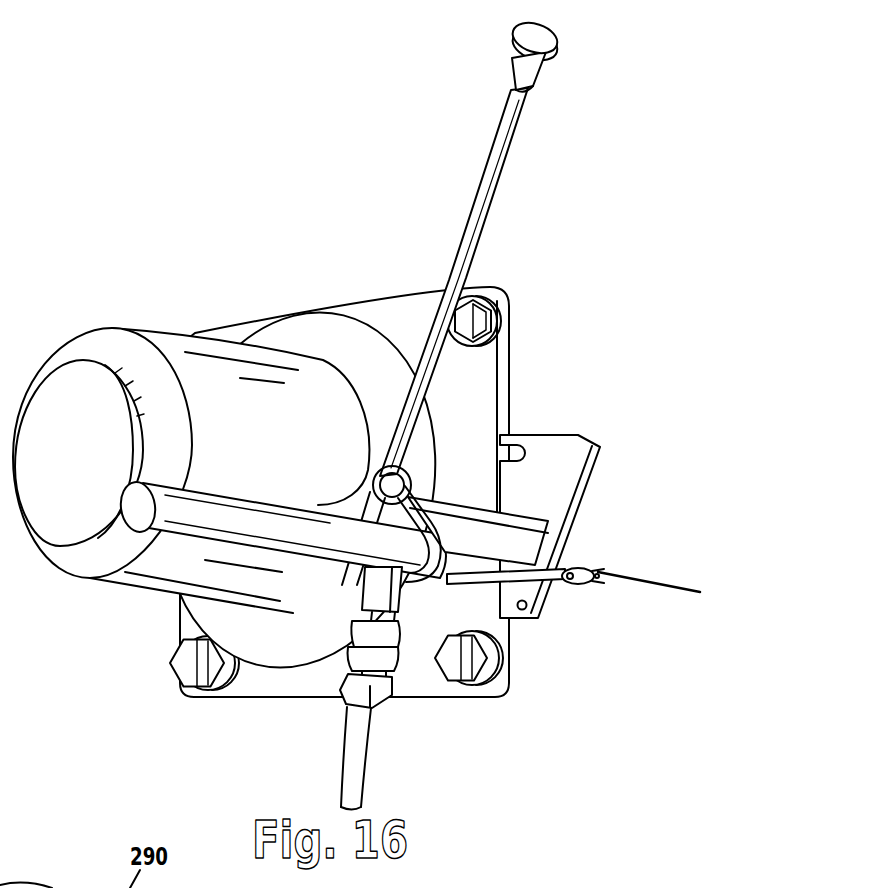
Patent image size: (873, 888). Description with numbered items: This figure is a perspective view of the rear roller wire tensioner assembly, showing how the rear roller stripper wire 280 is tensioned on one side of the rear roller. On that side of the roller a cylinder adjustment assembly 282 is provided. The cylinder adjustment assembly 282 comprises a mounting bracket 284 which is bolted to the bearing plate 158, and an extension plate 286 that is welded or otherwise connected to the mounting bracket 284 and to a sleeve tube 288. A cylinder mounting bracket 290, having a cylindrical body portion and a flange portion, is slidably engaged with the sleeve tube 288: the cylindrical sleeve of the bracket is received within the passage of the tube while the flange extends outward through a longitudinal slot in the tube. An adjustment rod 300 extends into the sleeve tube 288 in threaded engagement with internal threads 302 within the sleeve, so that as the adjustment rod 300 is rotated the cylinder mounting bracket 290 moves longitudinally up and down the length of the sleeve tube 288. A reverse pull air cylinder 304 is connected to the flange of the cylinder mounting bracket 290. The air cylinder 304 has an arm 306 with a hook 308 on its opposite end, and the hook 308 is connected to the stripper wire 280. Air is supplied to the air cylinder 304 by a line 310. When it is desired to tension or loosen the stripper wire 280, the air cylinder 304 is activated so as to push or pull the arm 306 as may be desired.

The bearing plate 158 is at (398, 302).
The rear roller stripper wire 280 is at (667, 583).
The cylinder adjustment assembly 282 is at (550, 370).
The mounting bracket 284 is at (548, 443).
The extension plate 286 is at (511, 553).
The sleeve tube 288 is at (370, 503).
The cylinder mounting bracket 290 is at (407, 585).
The adjustment rod 300 is at (494, 187).
The internal threads 302 is at (32, 887).
The reverse pull air cylinder 304 is at (240, 512).
The arm 306 is at (455, 579).
The hook 308 is at (590, 578).
The line 310 is at (347, 767).